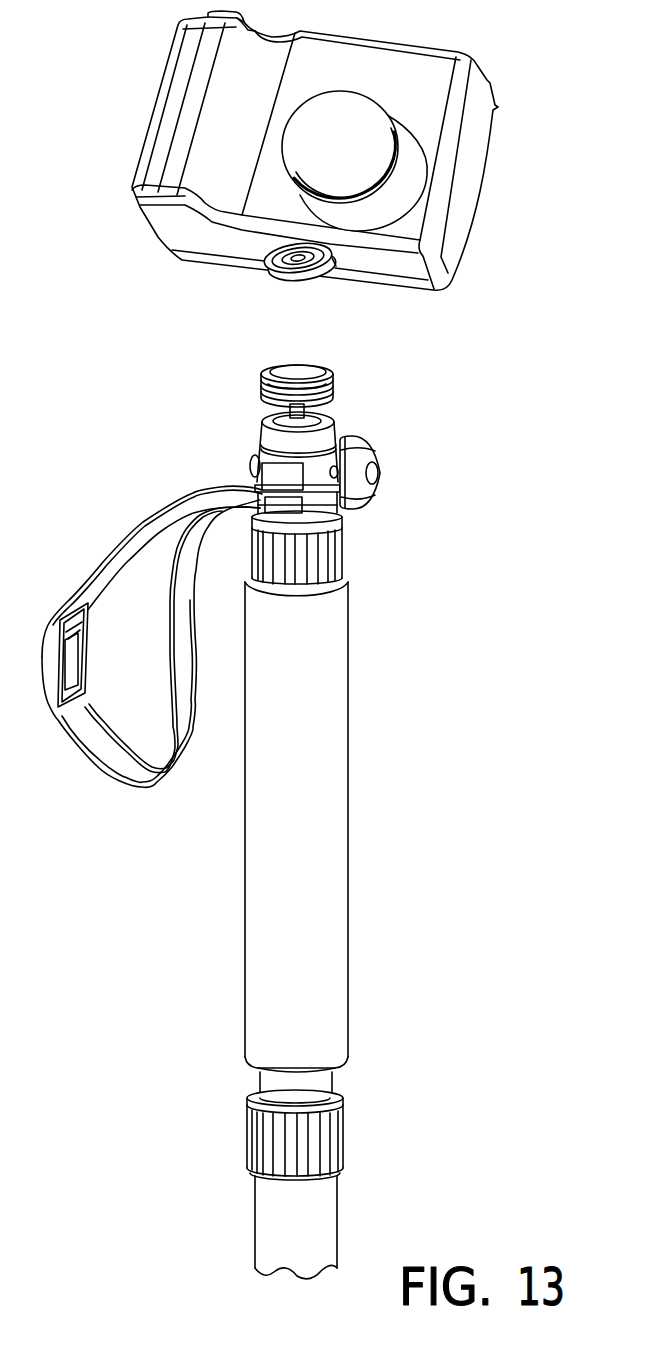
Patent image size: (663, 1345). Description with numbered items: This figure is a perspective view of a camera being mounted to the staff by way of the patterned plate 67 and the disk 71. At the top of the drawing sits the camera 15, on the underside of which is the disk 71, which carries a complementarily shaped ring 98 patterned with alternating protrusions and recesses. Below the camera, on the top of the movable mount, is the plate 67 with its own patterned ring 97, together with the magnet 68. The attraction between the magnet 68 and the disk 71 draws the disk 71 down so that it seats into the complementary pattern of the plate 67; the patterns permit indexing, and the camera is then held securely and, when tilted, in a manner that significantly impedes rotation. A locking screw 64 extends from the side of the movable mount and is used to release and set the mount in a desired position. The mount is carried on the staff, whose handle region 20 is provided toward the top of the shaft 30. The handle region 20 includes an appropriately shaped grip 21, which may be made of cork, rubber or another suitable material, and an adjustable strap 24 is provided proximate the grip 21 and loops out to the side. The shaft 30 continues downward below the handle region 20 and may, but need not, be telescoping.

The camera 15 is at (453, 222).
The disk 71 is at (288, 272).
The complementarily shaped ring 98 is at (303, 278).
The magnet 68 is at (295, 371).
The ring 97 is at (330, 377).
The plate 67 is at (262, 393).
The locking screw 64 is at (380, 438).
The handle region 20 is at (373, 783).
The grip 21 is at (250, 853).
The shaft 30 is at (372, 1222).
The adjustable strap 24 is at (123, 522).